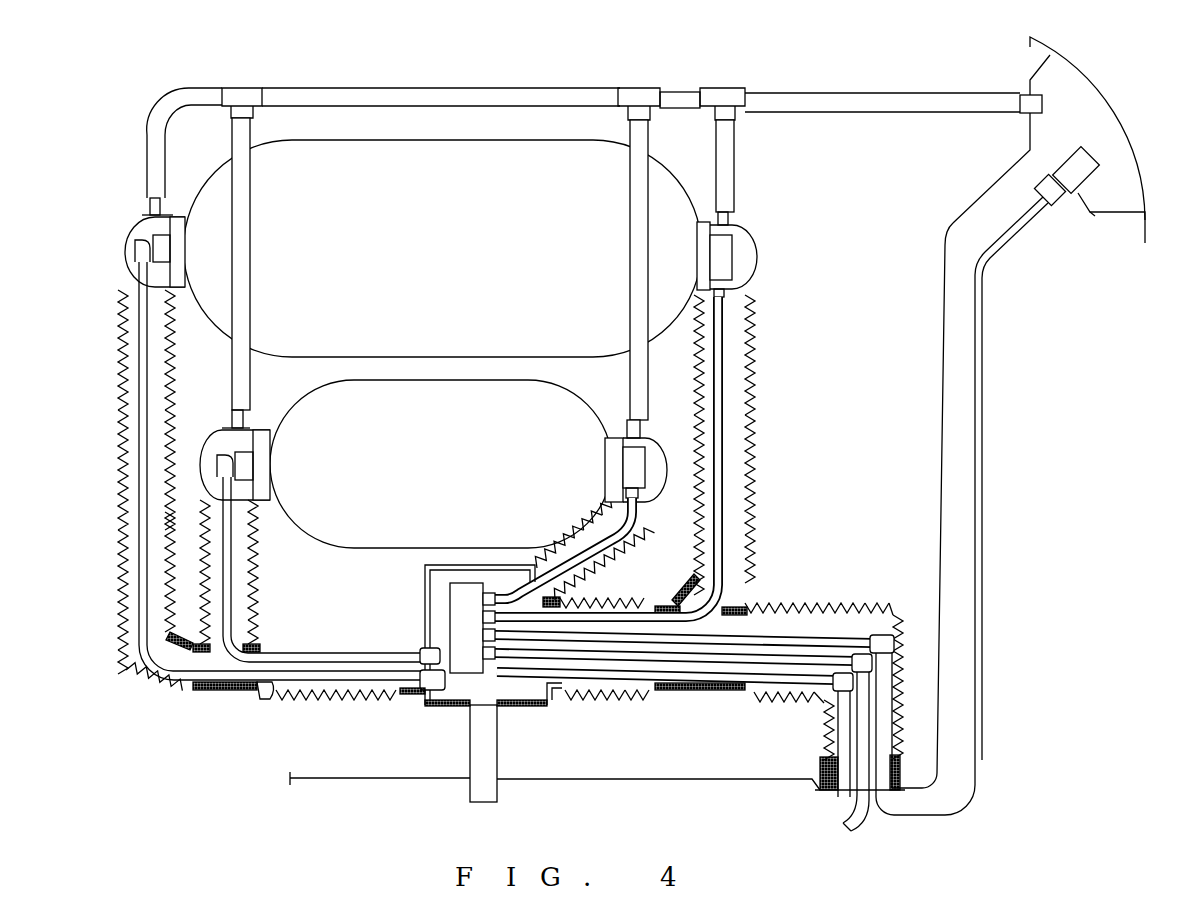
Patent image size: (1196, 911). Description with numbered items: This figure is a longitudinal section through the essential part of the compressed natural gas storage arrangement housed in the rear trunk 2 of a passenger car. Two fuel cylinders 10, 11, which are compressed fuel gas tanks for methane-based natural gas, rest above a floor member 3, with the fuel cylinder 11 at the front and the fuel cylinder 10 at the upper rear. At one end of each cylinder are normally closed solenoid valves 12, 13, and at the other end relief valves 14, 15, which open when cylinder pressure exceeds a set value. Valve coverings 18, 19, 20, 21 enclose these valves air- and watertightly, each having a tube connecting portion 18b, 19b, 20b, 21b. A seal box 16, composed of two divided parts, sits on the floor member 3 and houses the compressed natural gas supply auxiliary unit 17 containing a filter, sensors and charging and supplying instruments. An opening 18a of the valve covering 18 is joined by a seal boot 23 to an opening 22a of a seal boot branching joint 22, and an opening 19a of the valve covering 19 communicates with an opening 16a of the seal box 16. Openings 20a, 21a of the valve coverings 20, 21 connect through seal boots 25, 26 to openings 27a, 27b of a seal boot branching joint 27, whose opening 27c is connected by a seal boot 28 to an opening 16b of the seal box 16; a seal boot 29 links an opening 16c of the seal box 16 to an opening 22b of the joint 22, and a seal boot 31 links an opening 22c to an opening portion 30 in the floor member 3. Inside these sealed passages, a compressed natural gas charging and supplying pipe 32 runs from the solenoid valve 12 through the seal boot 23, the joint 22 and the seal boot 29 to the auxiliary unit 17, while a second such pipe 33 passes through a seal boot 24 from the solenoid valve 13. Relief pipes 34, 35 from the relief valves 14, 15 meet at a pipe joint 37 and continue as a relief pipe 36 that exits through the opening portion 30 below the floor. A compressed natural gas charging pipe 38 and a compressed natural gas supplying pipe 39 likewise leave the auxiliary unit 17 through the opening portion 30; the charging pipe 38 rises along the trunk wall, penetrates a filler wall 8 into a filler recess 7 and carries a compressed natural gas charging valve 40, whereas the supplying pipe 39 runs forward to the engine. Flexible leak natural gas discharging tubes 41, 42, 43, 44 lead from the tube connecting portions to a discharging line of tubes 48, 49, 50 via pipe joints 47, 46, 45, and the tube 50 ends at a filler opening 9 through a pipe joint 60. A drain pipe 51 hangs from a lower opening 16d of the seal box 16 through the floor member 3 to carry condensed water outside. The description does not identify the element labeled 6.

The rear trunk 2 is at (846, 294).
The floor member 3 is at (640, 779).
The hose 6 is at (940, 436).
The filler recess 7 is at (1126, 204).
The filler wall 8 is at (1097, 216).
The filler opening 9 is at (1038, 116).
The fuel cylinder 10 is at (478, 140).
The fuel cylinder 11 is at (535, 382).
The normally closed solenoid valve 12 is at (722, 252).
The normally closed solenoid valve 13 is at (648, 455).
The relief valve 14 is at (160, 243).
The relief valve 15 is at (232, 462).
The seal box 16 is at (428, 596).
The opening of seal box 16a is at (525, 578).
The opening of seal box 16b is at (402, 692).
The opening of seal box 16c is at (566, 690).
The lower opening of seal box 16d is at (430, 690).
The compressed natural gas supply auxiliary unit 17 is at (462, 600).
The valve covering 18 is at (758, 255).
The opening of valve covering 18a is at (726, 306).
The tube connecting portion 18b is at (730, 218).
The valve covering 19 is at (668, 478).
The opening of valve covering 19a is at (642, 520).
The tube connecting portion 19b is at (632, 437).
The valve covering 20 is at (122, 250).
The opening of valve covering 20a is at (128, 292).
The tube connecting portion 20b is at (162, 205).
The valve covering 21 is at (205, 458).
The opening of valve covering 21a is at (242, 528).
The tube connecting portion 21b is at (245, 428).
The seal boot branching joint 22 is at (710, 692).
The opening of seal boot branching joint 22a is at (722, 605).
The opening of seal boot branching joint 22b is at (660, 692).
The opening of seal boot branching joint 22c is at (755, 695).
The seal boot 23 is at (757, 420).
The seal boot 24 is at (622, 582).
The seal boot 25 is at (123, 482).
The seal boot 26 is at (257, 582).
The seal boot branching joint 27 is at (226, 693).
The opening of seal boot branching joint 27a is at (180, 693).
The opening of seal boot branching joint 27b is at (250, 622).
The opening of seal boot branching joint 27c is at (265, 694).
The seal boot 28 is at (330, 700).
The seal boot 29 is at (605, 700).
The opening portion 30 is at (822, 790).
The seal boot 31 is at (894, 612).
The compressed natural gas charging and supplying pipe 32 is at (757, 380).
The compressed natural gas charging and supplying pipe 33 is at (625, 540).
The relief pipe 34 is at (140, 418).
The relief pipe 35 is at (221, 547).
The relief pipe 36 is at (826, 660).
The pipe joint 37 is at (424, 705).
The compressed natural gas charging pipe 38 is at (762, 638).
The compressed natural gas supplying pipe 39 is at (803, 642).
The compressed natural gas charging valve 40 is at (1082, 162).
The leak natural gas discharging tube 41 is at (735, 160).
The leak natural gas discharging tube 42 is at (649, 200).
The leak natural gas discharging tube 43 is at (147, 128).
The leak natural gas discharging tube 44 is at (252, 206).
The pipe joint 45 is at (740, 92).
The pipe joint 46 is at (636, 88).
The pipe joint 47 is at (245, 88).
The tube 48 is at (332, 88).
The tube 49 is at (690, 92).
The leak natural gas discharging tube 50 is at (872, 93).
The drain pipe 51 is at (498, 750).
The pipe joint 60 is at (1025, 92).